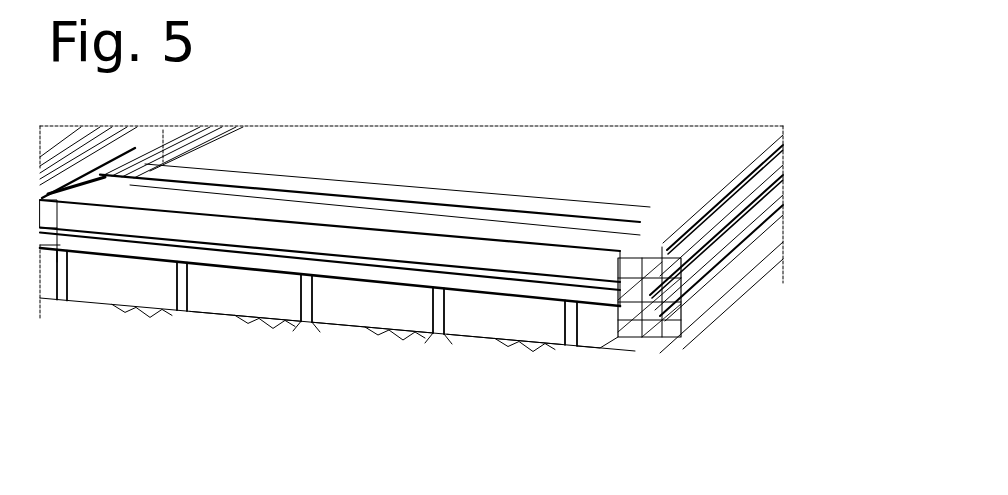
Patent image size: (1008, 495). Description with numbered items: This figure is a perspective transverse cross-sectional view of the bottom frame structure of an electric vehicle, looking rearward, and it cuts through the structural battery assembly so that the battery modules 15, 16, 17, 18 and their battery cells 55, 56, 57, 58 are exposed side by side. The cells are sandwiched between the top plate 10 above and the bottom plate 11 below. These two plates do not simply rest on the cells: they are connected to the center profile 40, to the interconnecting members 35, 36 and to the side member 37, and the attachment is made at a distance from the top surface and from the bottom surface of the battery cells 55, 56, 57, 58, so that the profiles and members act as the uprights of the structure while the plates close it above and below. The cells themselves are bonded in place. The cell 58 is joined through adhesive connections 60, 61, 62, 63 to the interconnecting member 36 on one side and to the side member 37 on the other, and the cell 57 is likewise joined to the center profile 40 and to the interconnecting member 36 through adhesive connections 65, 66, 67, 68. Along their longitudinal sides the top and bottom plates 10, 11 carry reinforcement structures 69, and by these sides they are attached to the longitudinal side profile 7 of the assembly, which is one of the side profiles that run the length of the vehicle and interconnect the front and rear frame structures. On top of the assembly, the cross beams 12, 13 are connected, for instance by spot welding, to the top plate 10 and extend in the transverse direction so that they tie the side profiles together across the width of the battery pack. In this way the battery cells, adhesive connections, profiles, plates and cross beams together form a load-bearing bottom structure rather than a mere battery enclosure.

The longitudinal side profile 7 is at (687, 311).
The top plate 10 is at (600, 302).
The bottom plate 11 is at (607, 351).
The cross beam 12 is at (607, 242).
The cross beam 13 is at (632, 213).
The battery module 15 is at (124, 321).
The battery module 16 is at (228, 337).
The battery module 17 is at (370, 353).
The battery module 18 is at (512, 368).
The interconnecting member 35 is at (185, 302).
The interconnecting member 36 is at (440, 310).
The side member 37 is at (592, 350).
The center profile 40 is at (290, 317).
The battery cell 55 is at (111, 282).
The battery cell 56 is at (228, 302).
The battery cell 57 is at (348, 318).
The battery cell 58 is at (500, 328).
The adhesive connection 60 is at (443, 310).
The adhesive connection 61 is at (563, 303).
The adhesive connection 62 is at (440, 325).
The adhesive connection 63 is at (565, 345).
The adhesive connection 65 is at (312, 327).
The adhesive connection 66 is at (420, 340).
The adhesive connection 67 is at (330, 218).
The adhesive connection 68 is at (438, 310).
The reinforcement structure 69 is at (647, 335).